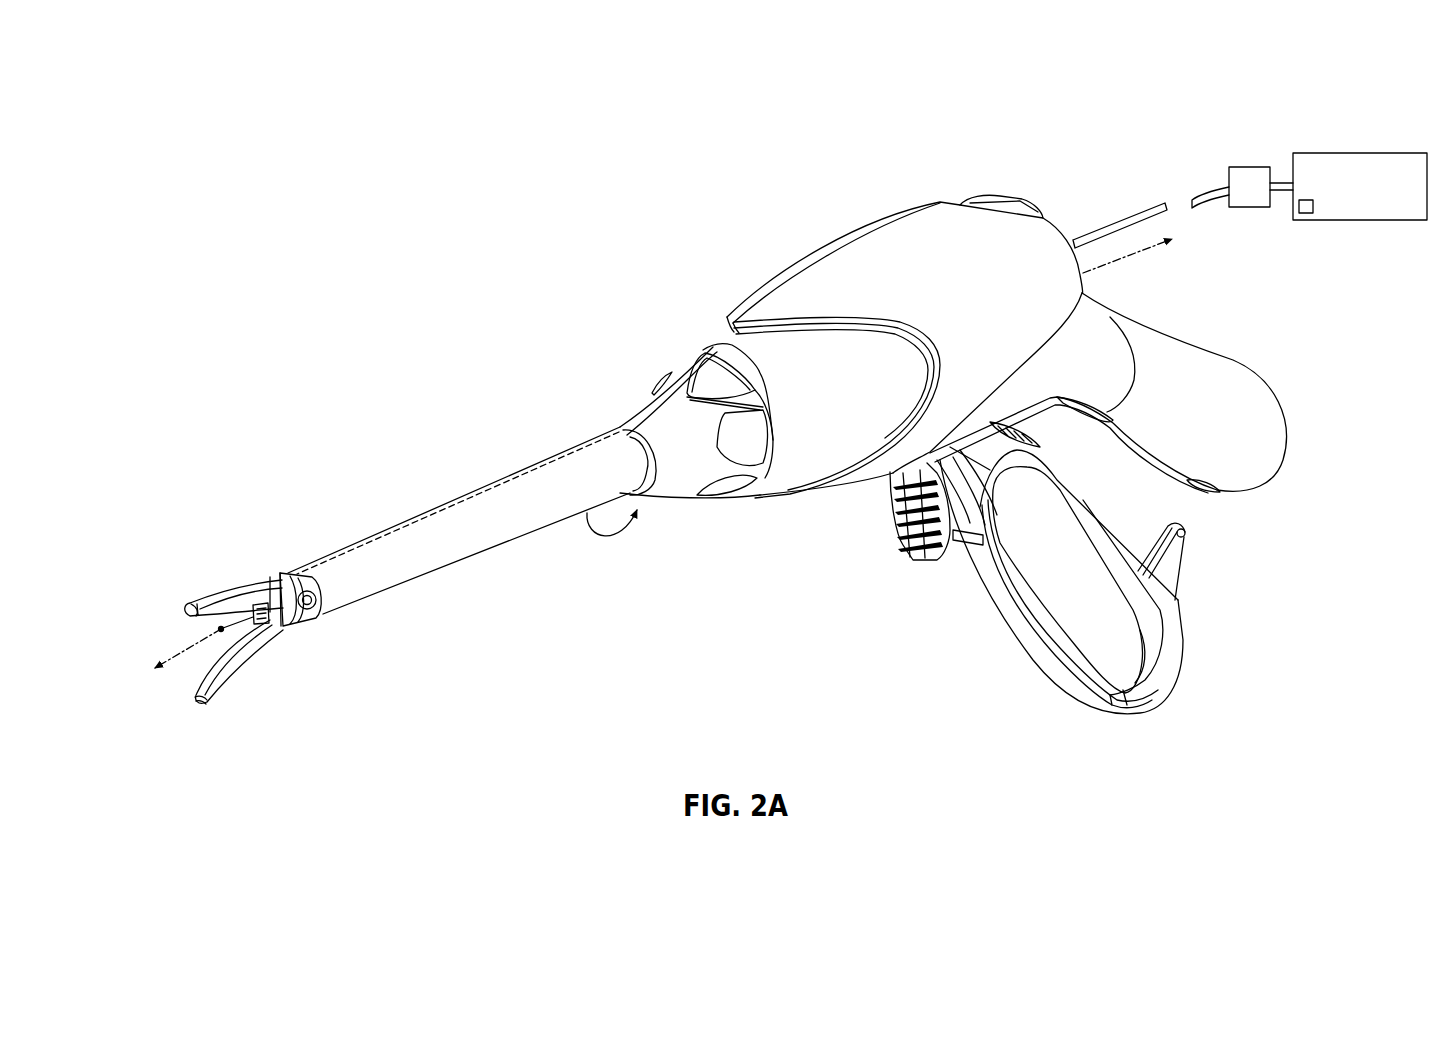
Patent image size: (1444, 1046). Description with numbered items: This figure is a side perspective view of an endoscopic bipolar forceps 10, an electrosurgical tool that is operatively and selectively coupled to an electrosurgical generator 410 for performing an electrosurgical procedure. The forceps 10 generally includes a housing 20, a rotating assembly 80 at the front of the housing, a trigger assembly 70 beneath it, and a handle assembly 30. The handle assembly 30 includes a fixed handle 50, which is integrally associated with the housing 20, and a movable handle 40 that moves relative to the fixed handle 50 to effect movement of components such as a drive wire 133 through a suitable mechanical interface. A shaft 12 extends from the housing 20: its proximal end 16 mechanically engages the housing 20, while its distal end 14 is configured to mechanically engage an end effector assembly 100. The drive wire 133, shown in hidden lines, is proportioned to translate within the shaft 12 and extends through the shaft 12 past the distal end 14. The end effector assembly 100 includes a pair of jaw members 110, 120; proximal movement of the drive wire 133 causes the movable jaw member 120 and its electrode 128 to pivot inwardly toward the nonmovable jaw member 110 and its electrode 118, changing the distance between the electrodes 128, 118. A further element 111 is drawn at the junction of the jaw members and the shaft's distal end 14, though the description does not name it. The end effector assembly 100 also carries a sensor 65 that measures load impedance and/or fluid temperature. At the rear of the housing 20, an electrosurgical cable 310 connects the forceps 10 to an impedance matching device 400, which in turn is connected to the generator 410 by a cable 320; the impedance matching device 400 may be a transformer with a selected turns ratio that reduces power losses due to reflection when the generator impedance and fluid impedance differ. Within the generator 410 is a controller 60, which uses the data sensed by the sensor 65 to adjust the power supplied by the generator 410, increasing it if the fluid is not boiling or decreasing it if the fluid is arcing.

The bipolar forceps 10 is at (760, 217).
The shaft 12 is at (425, 562).
The distal end 14 is at (317, 560).
The proximal end 16 is at (618, 430).
The housing 20 is at (1068, 230).
The handle assembly 30 is at (1186, 709).
The movable handle 40 is at (1165, 660).
The fixed handle 50 is at (1260, 400).
The controller 60 is at (1307, 217).
The sensor 65 is at (263, 633).
The trigger assembly 70 is at (884, 537).
The rotating assembly 80 is at (669, 358).
The end effector assembly 100 is at (273, 556).
The jaw member 110 is at (237, 667).
The pivot pin 111 is at (320, 607).
The electrode 118 is at (197, 700).
The jaw member 120 is at (187, 610).
The electrode 128 is at (190, 620).
The drive wire 133 is at (488, 482).
The electrosurgical cable 310 is at (1157, 200).
The cable 320 is at (1280, 180).
The impedance matching device 400 is at (1249, 187).
The electrosurgical generator 410 is at (1360, 152).